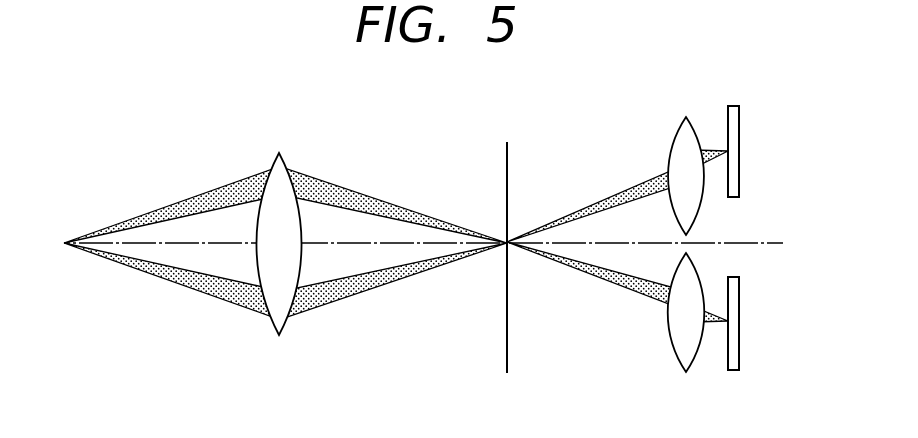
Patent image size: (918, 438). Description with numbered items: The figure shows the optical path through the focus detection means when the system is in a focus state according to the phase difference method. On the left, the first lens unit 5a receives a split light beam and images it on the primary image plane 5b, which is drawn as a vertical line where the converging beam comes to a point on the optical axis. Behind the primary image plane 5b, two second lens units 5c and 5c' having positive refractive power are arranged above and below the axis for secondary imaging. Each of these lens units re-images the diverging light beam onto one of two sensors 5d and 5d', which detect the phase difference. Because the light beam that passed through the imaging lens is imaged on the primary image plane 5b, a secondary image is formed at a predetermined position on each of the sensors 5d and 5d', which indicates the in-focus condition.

The first lens unit 5a is at (288, 207).
The primary image plane 5b is at (502, 175).
The second lens unit 5c is at (652, 156).
The second lens unit 5c' is at (648, 330).
The sensor 5d is at (777, 151).
The sensor 5d' is at (779, 323).